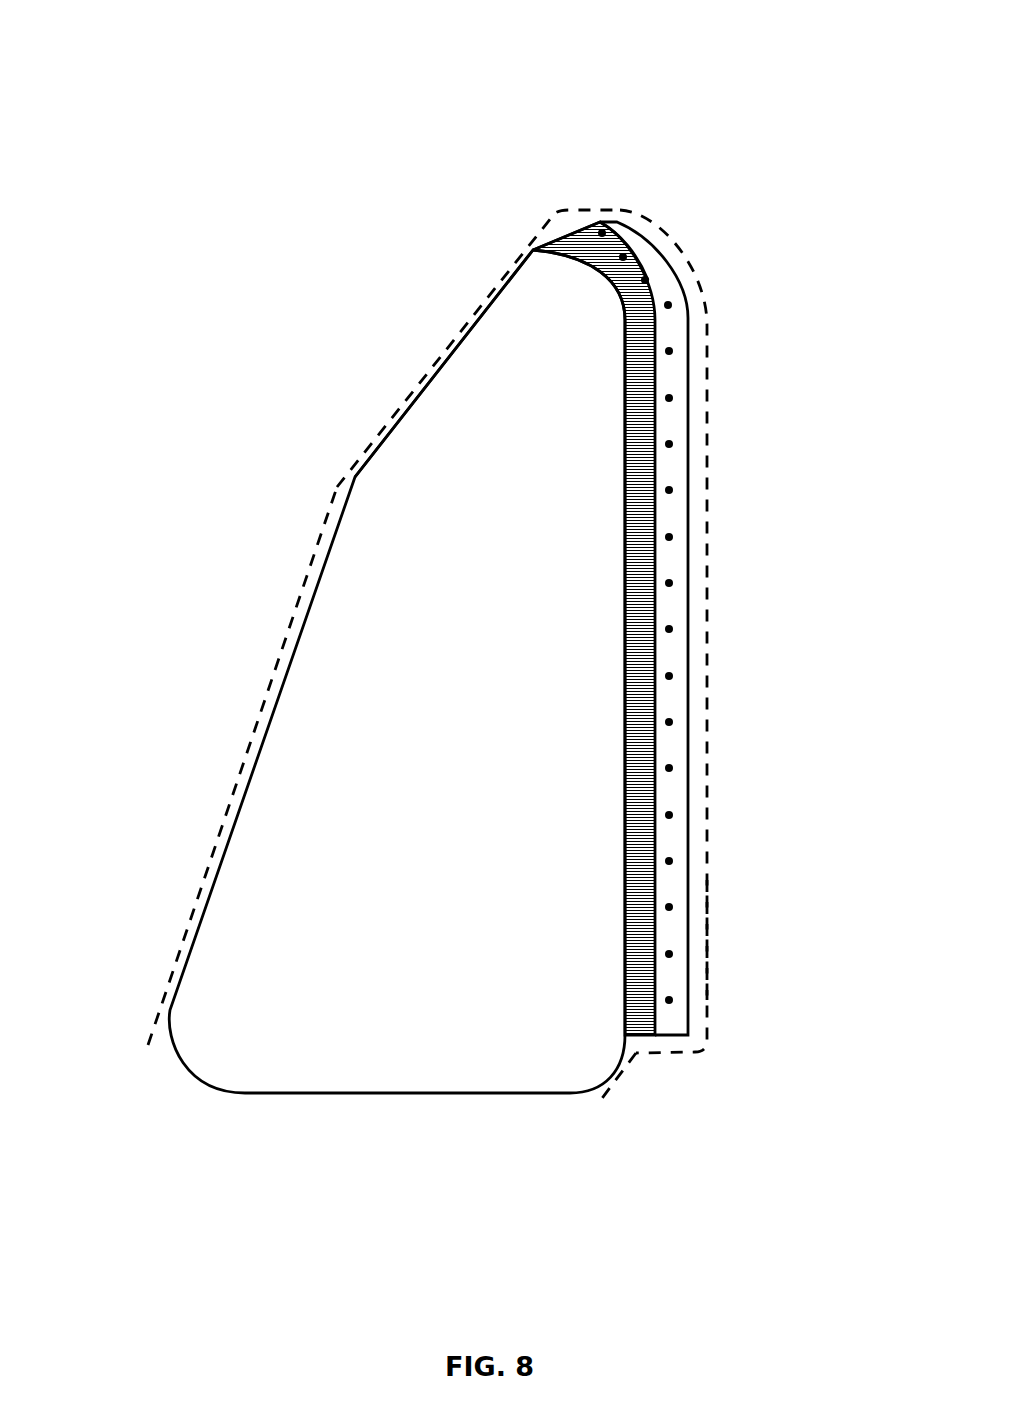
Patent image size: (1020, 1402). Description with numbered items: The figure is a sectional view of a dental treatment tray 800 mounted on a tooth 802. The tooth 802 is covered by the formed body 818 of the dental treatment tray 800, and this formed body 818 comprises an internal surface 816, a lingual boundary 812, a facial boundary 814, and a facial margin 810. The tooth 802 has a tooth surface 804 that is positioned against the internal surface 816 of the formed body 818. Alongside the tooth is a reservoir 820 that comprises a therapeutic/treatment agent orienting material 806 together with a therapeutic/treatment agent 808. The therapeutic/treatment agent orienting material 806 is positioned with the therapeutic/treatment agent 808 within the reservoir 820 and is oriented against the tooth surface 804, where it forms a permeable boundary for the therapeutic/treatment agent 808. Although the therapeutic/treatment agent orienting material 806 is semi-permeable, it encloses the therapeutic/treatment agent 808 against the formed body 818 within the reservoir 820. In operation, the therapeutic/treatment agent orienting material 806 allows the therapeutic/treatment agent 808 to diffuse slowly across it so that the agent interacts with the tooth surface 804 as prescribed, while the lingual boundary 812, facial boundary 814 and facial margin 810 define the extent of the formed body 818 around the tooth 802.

The dental treatment tray 800 is at (860, 72).
The tooth 802 is at (445, 840).
The tooth surface 804 is at (622, 428).
The therapeutic/treatment agent orienting material 806 is at (563, 234).
The therapeutic/treatment agent 808 is at (664, 271).
The facial margin 810 is at (704, 619).
The lingual boundary 812 is at (160, 978).
The facial boundary 814 is at (623, 1073).
The internal surface 816 is at (385, 440).
The formed body 818 is at (272, 408).
The reservoir 820 is at (710, 937).